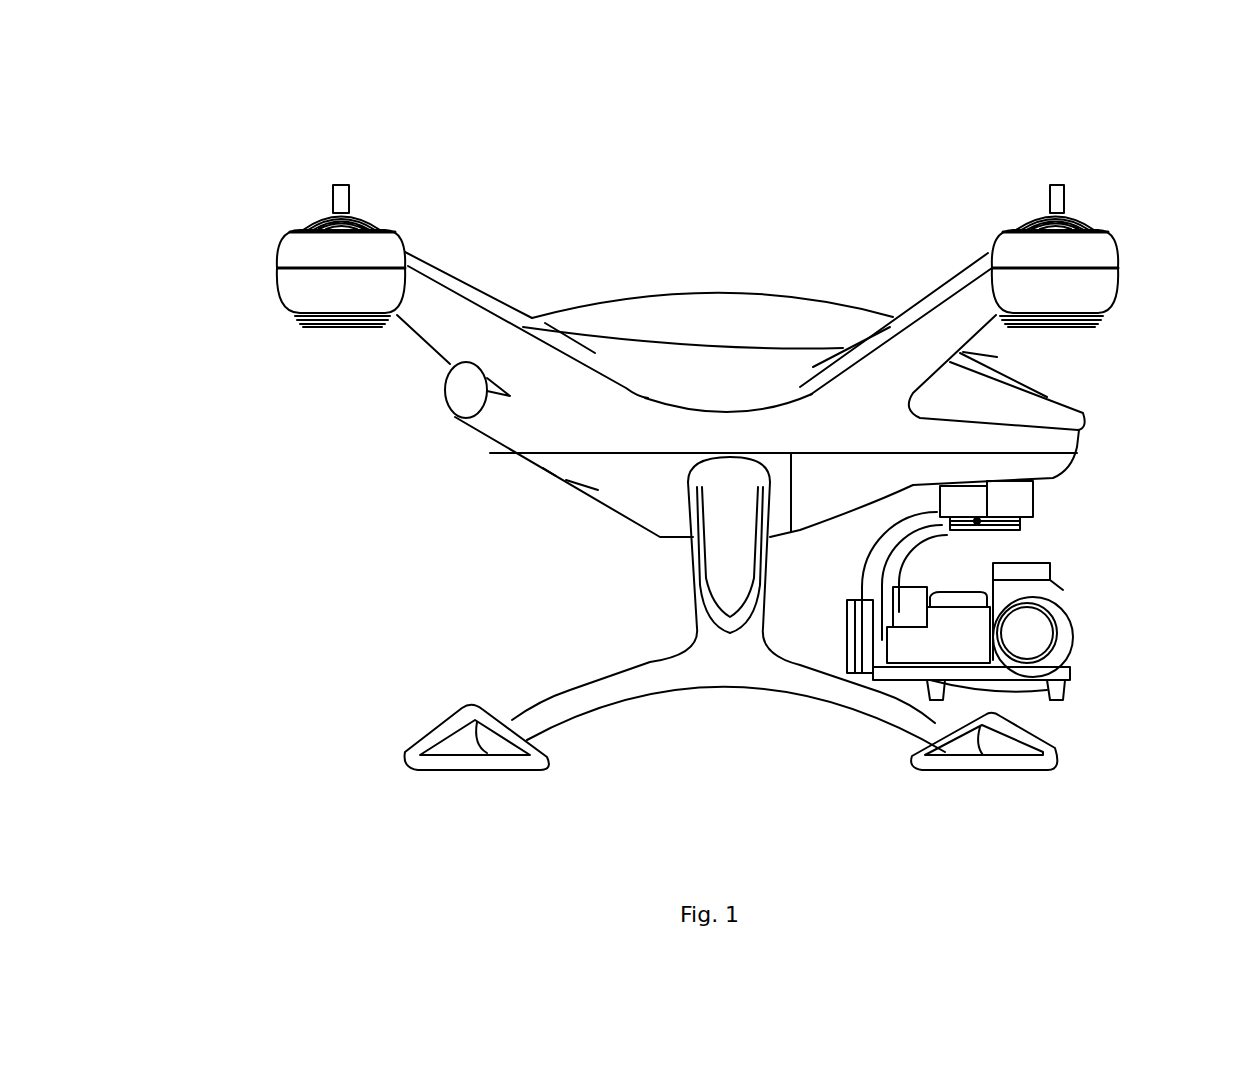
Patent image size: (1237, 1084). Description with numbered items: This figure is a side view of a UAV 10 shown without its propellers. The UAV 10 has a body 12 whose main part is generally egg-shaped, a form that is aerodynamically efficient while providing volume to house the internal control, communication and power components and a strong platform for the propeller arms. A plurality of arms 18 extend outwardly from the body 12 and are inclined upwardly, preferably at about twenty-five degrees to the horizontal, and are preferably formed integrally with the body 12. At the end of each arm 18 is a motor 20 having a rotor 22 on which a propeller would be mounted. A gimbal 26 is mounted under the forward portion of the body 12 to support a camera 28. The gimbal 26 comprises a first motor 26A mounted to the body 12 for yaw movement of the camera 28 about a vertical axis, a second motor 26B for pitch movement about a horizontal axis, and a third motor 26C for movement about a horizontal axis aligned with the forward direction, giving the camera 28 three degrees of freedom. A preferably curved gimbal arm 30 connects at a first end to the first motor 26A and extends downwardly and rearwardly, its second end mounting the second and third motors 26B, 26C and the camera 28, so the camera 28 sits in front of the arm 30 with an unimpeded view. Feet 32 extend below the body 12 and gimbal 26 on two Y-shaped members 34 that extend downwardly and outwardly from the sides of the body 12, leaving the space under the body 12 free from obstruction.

The UAV 10 is at (848, 183).
The body 12 is at (724, 292).
The arms 18 is at (447, 320).
The motor 20 is at (295, 248).
The rotor 22 is at (349, 190).
The gimbal 26 is at (1012, 624).
The first motor 26A is at (1010, 498).
The second motor 26B is at (1033, 633).
The third motor 26C is at (913, 613).
The camera 28 is at (1014, 624).
The gimbal arm 30 is at (893, 543).
The feet 32 is at (475, 763).
The Y-shaped members 34 is at (728, 650).